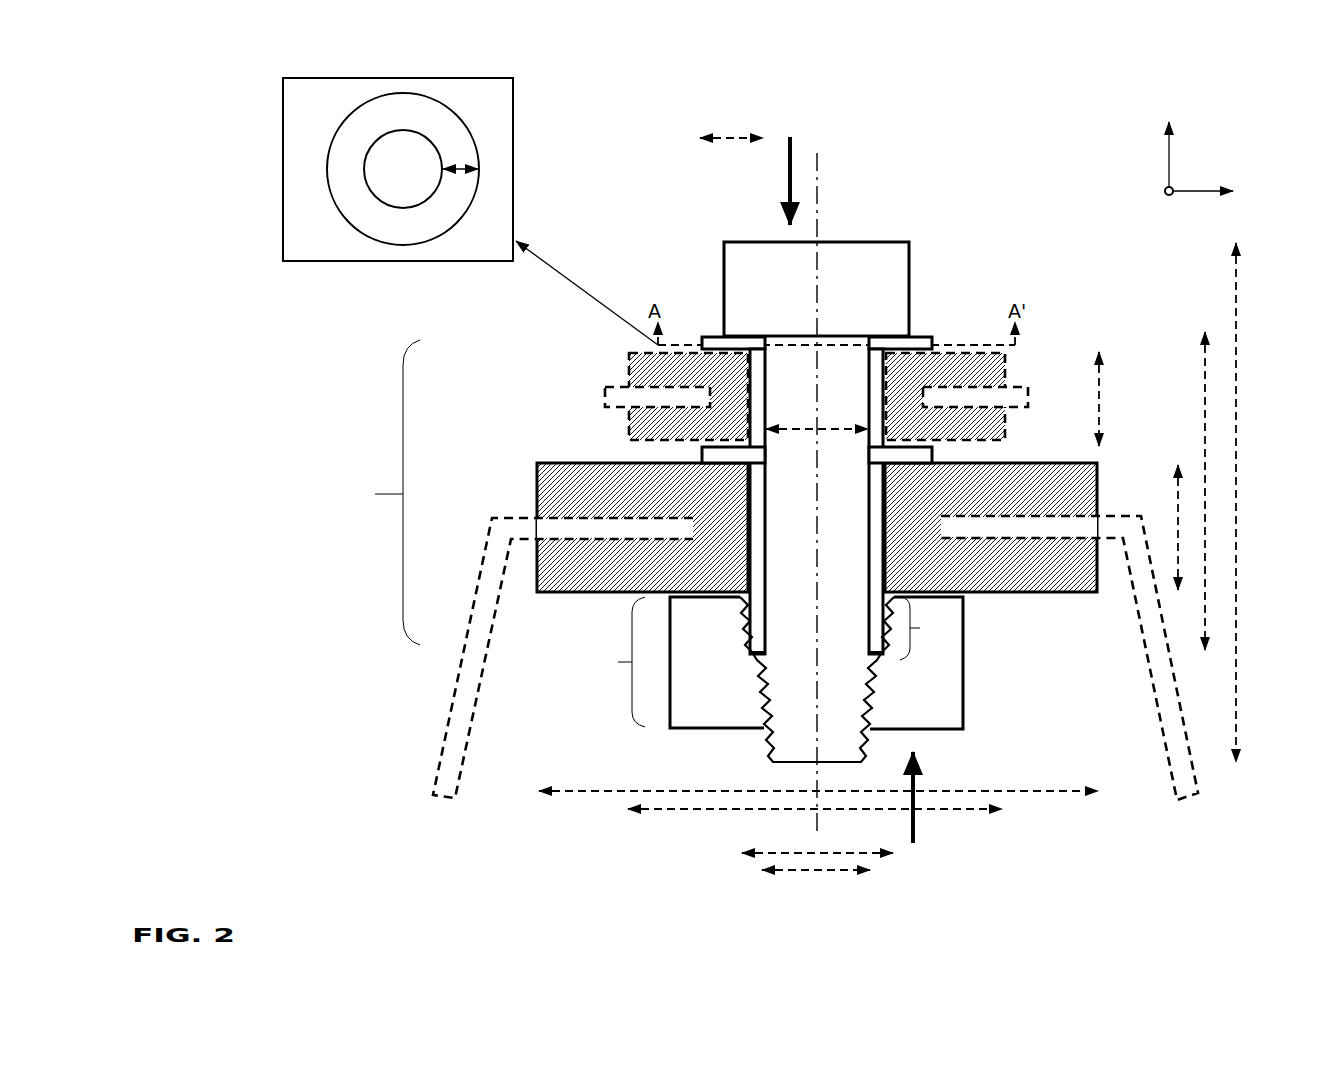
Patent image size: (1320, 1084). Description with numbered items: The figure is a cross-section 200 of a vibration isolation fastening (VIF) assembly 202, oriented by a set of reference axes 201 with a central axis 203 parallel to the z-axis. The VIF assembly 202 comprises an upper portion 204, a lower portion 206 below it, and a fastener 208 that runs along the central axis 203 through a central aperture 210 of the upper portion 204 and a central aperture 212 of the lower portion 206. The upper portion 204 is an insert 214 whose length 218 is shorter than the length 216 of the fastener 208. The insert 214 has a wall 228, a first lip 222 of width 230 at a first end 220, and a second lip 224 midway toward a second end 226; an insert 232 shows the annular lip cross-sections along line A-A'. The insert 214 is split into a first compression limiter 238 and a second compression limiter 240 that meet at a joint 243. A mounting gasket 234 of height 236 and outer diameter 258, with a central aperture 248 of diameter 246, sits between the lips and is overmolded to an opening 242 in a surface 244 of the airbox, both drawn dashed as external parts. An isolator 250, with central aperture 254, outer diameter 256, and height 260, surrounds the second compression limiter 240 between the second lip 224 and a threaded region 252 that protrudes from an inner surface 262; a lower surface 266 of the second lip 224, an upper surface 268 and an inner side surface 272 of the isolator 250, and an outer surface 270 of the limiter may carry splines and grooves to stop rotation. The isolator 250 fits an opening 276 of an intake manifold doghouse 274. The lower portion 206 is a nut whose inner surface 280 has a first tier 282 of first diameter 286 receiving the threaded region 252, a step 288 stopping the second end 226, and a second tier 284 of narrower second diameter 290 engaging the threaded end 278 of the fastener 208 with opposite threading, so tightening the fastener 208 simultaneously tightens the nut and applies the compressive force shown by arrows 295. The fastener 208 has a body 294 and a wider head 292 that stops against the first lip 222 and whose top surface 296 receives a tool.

The cross-section 200 is at (184, 98).
The set of reference axes 201 is at (1222, 133).
The VIF assembly 202 is at (615, 222).
The central axis 203 is at (819, 190).
The upper portion 204 is at (765, 570).
The lower portion 206 is at (771, 663).
The fastener 208 is at (767, 240).
The central aperture 210 is at (421, 181).
The central aperture 212 is at (768, 748).
The insert 214 is at (858, 353).
The length 216 is at (1236, 305).
The length 218 is at (1205, 393).
The first end 220 is at (912, 330).
The first lip 222 is at (330, 140).
The second lip 224 is at (935, 455).
The second end 226 is at (888, 665).
The wall 228 is at (868, 378).
The width 230 is at (462, 169).
The insert 232 is at (330, 262).
The mounting gasket 234 is at (630, 368).
The height 236 is at (1099, 390).
The first compression limiter 238 is at (757, 392).
The second compression limiter 240 is at (870, 505).
The opening 242 is at (725, 405).
The joint 243 is at (745, 455).
The surface 244 is at (605, 402).
The diameter 246 is at (805, 428).
The central aperture 248 is at (755, 352).
The isolator 250 is at (557, 500).
The threaded region 252 is at (930, 628).
The central aperture 254 is at (742, 623).
The outer diameter 256 is at (602, 791).
The outer diameter 258 is at (745, 809).
The height 260 is at (1178, 530).
The inner surface 262 is at (765, 560).
The lower surface 266 is at (748, 480).
The upper surface 268 is at (567, 463).
The outer surface 270 is at (762, 600).
The inner side surface 272 is at (745, 560).
The intake manifold doghouse 274 is at (1127, 675).
The opening 276 is at (917, 548).
The threaded end 278 is at (862, 737).
The inner surface 280 is at (700, 678).
The first tier 282 is at (740, 640).
The second tier 284 is at (757, 697).
The first diameter 286 is at (843, 853).
The step 288 is at (760, 668).
The second diameter 290 is at (800, 870).
The head 292 is at (866, 278).
The body 294 is at (866, 462).
The arrows 295 is at (793, 160).
The top surface 296 is at (905, 243).